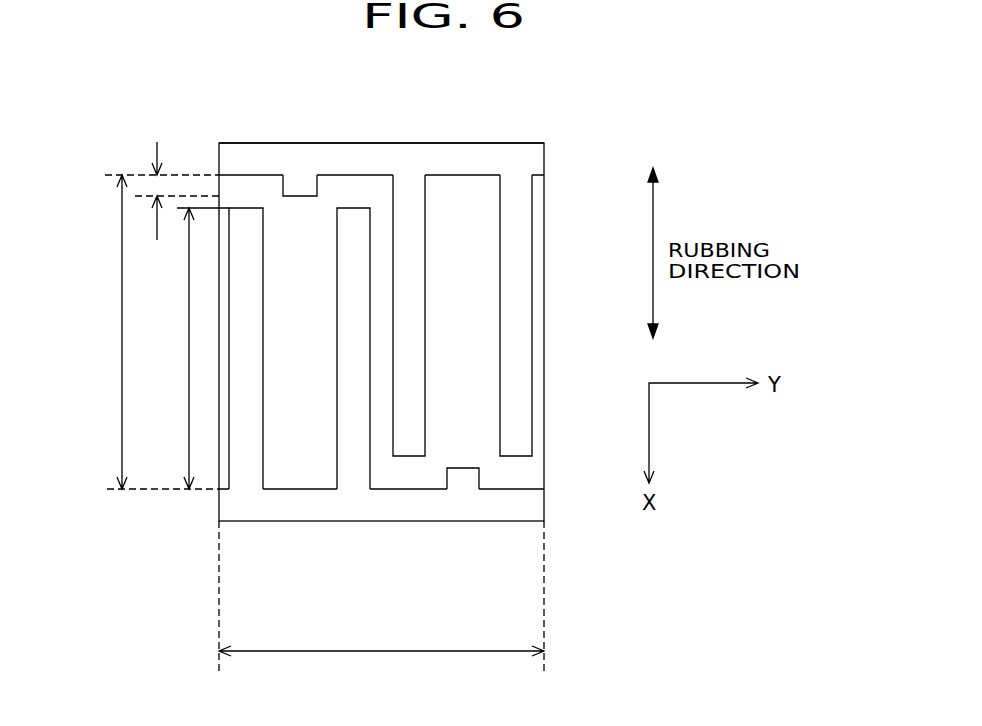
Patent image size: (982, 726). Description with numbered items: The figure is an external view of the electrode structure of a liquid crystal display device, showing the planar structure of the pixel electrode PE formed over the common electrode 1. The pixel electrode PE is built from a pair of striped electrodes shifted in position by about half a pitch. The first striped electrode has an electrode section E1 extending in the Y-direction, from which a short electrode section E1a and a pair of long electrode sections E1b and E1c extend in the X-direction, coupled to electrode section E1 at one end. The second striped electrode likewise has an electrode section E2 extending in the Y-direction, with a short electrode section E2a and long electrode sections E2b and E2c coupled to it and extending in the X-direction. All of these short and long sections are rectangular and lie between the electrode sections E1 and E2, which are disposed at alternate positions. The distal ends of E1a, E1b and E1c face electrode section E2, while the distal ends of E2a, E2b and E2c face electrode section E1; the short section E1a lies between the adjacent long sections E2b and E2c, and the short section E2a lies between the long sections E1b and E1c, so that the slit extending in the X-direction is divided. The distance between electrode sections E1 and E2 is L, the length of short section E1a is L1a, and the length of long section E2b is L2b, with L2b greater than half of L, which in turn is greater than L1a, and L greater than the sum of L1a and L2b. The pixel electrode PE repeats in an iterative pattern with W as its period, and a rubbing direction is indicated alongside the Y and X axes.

The common electrode (CE) 1 is at (538, 368).
The electrode section E1 is at (368, 153).
The short electrode section E1a is at (302, 192).
The long electrode section E1b is at (520, 229).
The long electrode section E1c is at (412, 255).
The pixel electrode PE is at (515, 167).
The electrode section E2 is at (407, 505).
The short electrode section E2a is at (463, 483).
The long electrode section E2b is at (245, 409).
The long electrode section E2c is at (348, 398).
The distance between electrode sections L is at (156, 332).
The length of short electrode section L1a is at (162, 177).
The length of long electrode section L2b is at (183, 348).
The period of iterative pattern W is at (381, 602).